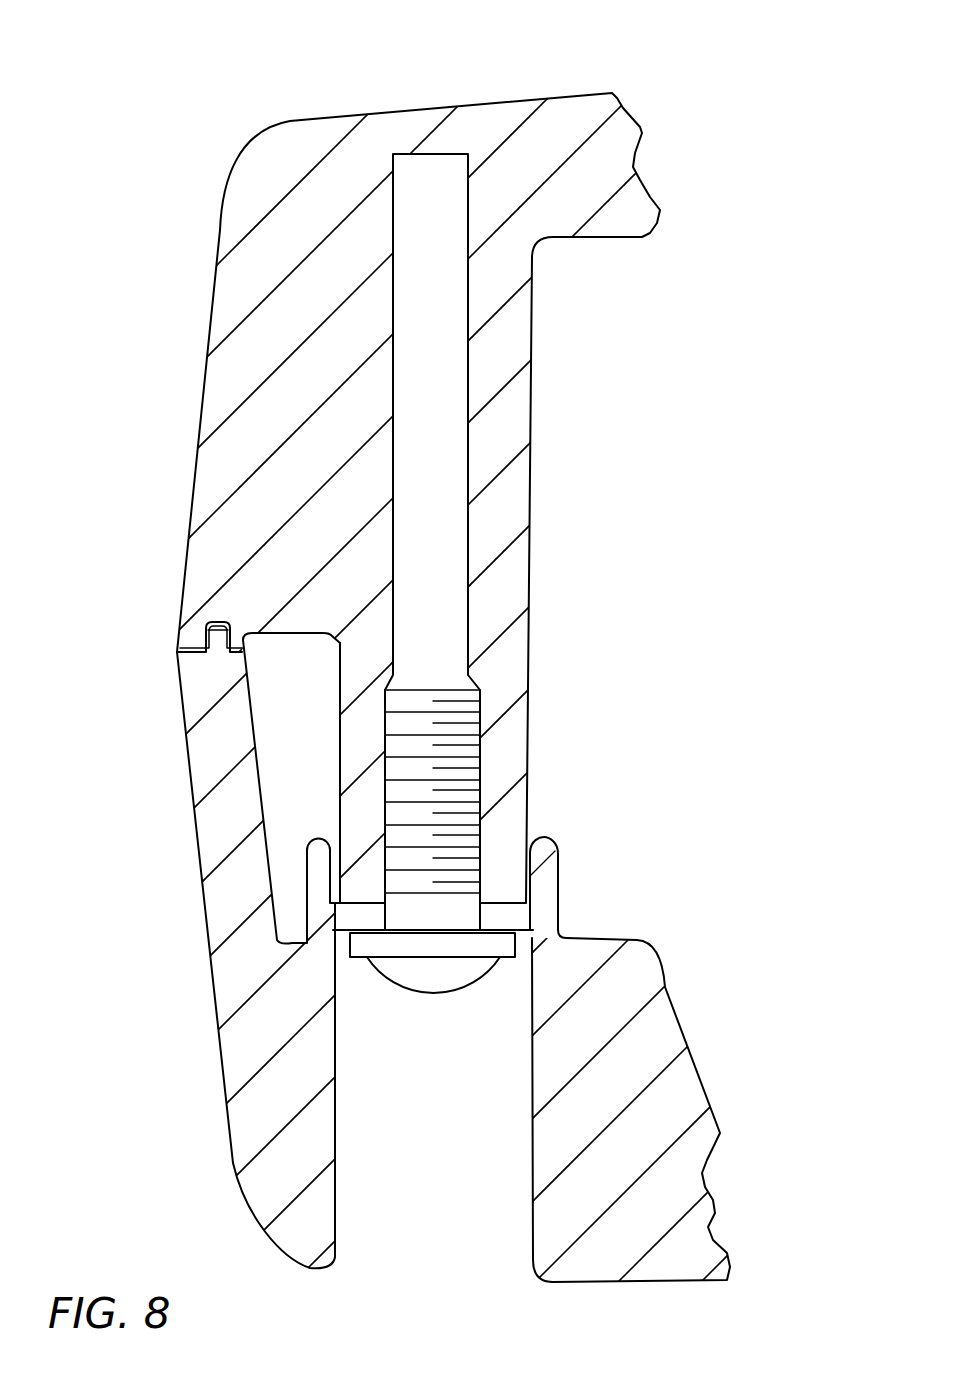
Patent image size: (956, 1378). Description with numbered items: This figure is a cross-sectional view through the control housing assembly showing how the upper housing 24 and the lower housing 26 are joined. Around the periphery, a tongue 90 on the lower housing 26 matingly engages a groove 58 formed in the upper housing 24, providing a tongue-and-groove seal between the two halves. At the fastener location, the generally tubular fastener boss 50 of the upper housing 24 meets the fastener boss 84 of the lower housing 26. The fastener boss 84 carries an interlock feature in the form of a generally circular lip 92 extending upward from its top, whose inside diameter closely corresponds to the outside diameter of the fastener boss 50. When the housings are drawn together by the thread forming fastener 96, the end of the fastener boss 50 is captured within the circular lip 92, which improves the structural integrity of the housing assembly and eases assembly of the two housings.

The upper housing 24 is at (500, 110).
The lower housing 26 is at (223, 982).
The fastener boss 50 is at (513, 743).
The groove 58 is at (218, 622).
The fastener boss 84 is at (550, 895).
The tongue 90 is at (177, 633).
The circular lip 92 is at (313, 840).
The thread forming fastener 96 is at (437, 985).